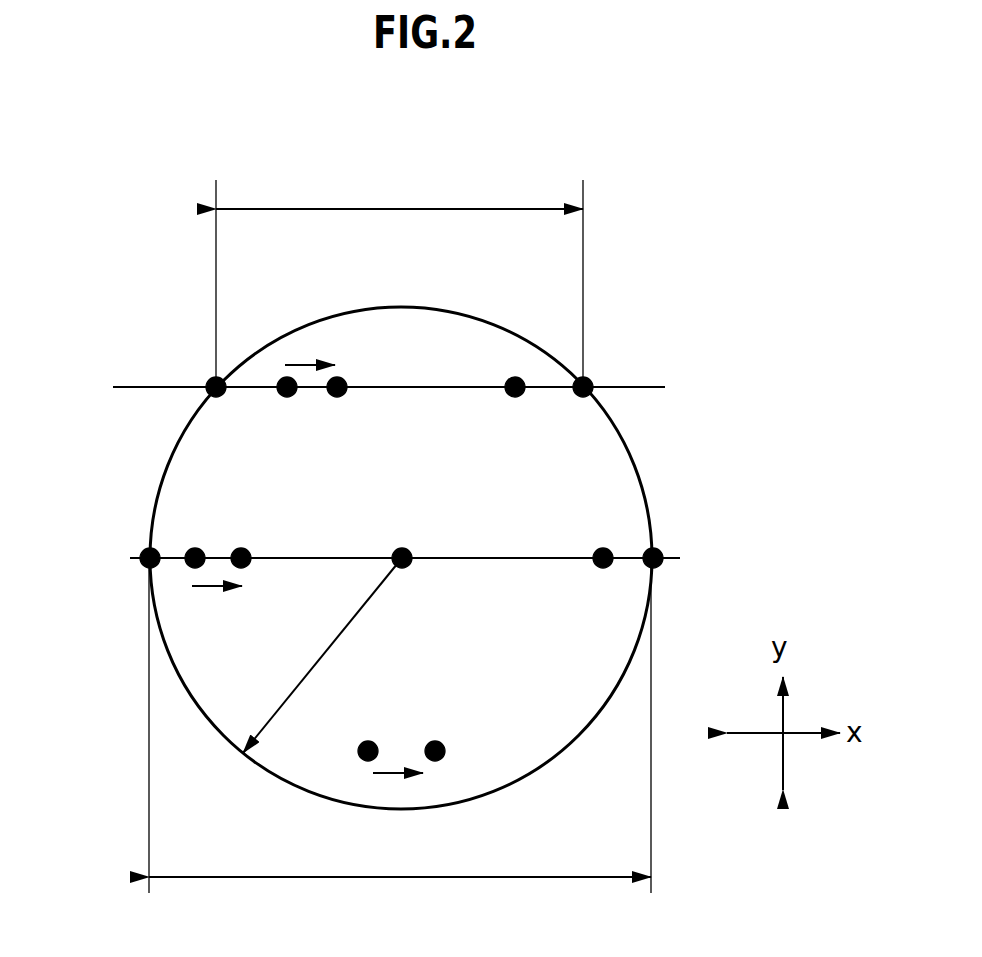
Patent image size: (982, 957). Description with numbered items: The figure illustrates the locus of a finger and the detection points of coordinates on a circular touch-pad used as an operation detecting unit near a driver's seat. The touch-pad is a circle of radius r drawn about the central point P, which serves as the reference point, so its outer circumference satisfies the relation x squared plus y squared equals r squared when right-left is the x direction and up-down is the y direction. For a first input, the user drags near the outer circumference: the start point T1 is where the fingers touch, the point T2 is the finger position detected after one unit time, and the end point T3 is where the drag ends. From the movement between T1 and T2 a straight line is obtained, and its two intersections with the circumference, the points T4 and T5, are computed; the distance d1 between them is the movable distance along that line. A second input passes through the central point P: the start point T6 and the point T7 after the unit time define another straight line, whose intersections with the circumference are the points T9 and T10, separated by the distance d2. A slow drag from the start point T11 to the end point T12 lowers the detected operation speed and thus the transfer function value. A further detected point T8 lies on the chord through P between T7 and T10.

The start point T1 is at (287, 387).
The point after unit time T2 is at (337, 387).
The end point T3 is at (515, 387).
The intersection point T4 is at (216, 387).
The intersection point T5 is at (583, 387).
The start point T6 is at (195, 558).
The point after unit time T7 is at (241, 558).
The eighth target position T8 is at (603, 558).
The intersection point T9 is at (150, 558).
The intersection point T10 is at (653, 558).
The start point T11 is at (368, 751).
The end point T12 is at (435, 751).
The central point P is at (402, 558).
The radius r is at (322, 655).
The distance d1 is at (399, 281).
The distance d2 is at (400, 725).